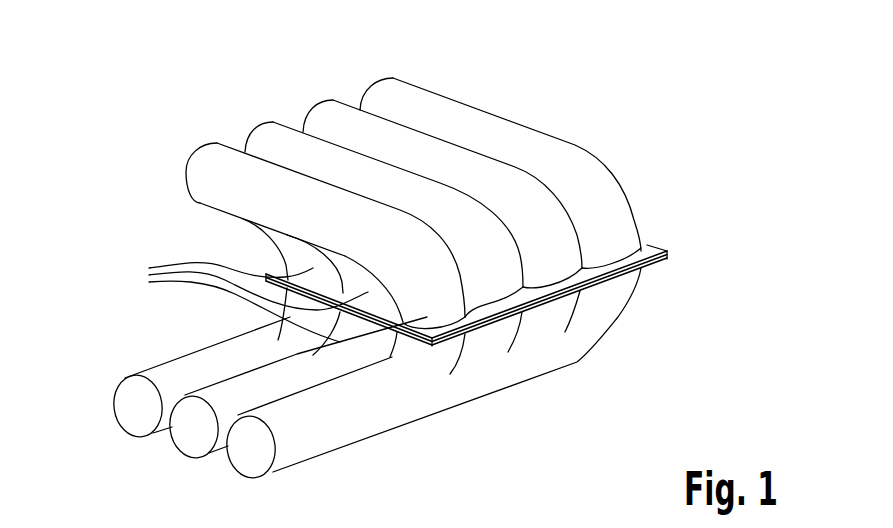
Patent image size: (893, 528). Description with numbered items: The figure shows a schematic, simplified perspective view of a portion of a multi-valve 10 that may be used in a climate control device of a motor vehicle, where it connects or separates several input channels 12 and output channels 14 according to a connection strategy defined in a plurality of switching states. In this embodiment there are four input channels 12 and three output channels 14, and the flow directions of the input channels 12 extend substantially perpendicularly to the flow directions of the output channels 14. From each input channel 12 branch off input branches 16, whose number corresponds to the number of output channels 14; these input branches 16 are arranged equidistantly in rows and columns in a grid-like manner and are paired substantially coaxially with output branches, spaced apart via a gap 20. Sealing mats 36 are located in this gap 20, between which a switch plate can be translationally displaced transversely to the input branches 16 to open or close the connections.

The multi-valve 10 is at (637, 118).
The input channels 12 is at (207, 163).
The output channels 14 is at (268, 417).
The input branches 16 is at (242, 302).
The gap 20 is at (650, 263).
The sealing mats 36 is at (647, 243).